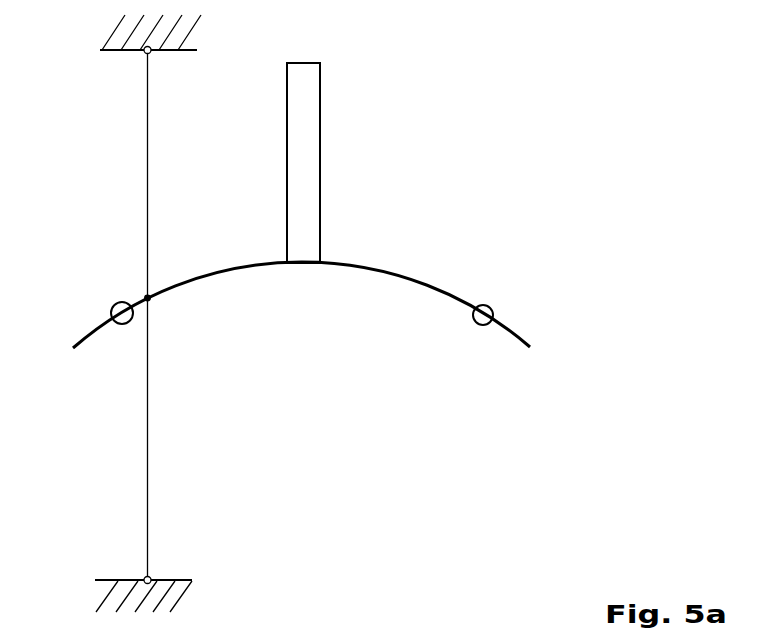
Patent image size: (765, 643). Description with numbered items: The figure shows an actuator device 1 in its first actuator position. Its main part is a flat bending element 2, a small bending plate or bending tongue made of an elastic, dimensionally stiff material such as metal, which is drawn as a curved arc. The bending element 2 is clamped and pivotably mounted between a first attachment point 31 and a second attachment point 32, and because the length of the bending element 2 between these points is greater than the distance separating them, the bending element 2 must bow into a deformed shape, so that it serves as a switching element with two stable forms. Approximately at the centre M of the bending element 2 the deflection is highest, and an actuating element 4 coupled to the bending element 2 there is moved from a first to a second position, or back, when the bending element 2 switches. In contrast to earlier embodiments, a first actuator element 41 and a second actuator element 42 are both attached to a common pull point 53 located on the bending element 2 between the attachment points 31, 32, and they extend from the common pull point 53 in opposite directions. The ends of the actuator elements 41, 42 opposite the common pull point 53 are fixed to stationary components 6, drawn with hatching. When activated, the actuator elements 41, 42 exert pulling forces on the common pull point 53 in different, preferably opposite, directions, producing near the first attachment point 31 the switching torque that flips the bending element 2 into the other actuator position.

The actuator device 1 is at (567, 147).
The bending element 2 is at (407, 277).
The actuating element 4 is at (307, 145).
The stationary component 6 is at (122, 51).
The first attachment point 31 is at (114, 304).
The second attachment point 32 is at (483, 305).
The first actuator element 41 is at (148, 456).
The second actuator element 42 is at (147, 167).
The common pull point 53 is at (148, 298).
The centre of the bending element M is at (302, 265).